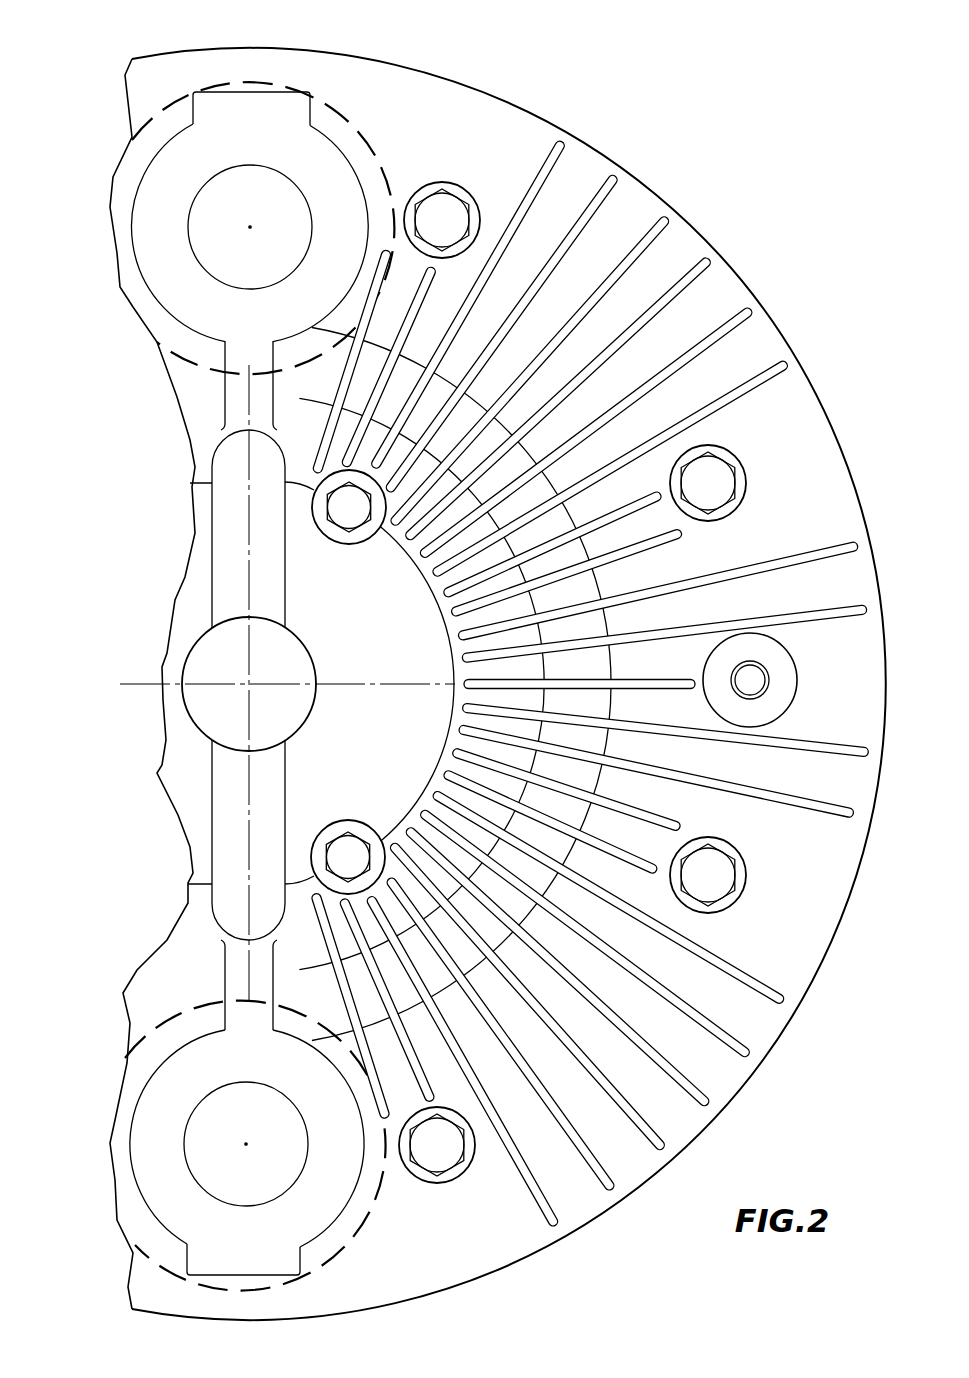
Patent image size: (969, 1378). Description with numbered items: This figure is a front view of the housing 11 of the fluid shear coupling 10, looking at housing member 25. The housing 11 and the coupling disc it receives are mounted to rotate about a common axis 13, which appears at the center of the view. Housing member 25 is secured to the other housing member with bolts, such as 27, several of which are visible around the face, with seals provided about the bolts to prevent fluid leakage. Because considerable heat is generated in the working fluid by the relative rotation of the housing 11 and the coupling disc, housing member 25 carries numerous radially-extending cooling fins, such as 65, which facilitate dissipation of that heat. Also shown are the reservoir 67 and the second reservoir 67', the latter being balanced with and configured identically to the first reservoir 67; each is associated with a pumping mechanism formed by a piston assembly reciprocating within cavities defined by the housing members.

The fluid shear coupling 10 is at (772, 120).
The housing 11 is at (522, 97).
The common axis 13 is at (249, 684).
The housing member 25 is at (380, 88).
The bolt 27 is at (432, 212).
The cooling fin 65 is at (770, 366).
The reservoir 67 is at (270, 1146).
The second reservoir 67' is at (262, 222).